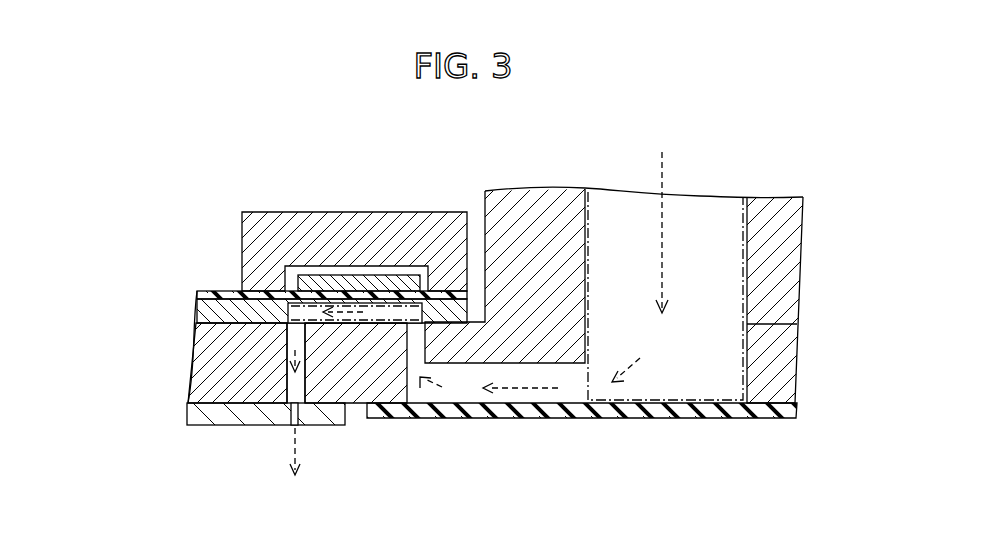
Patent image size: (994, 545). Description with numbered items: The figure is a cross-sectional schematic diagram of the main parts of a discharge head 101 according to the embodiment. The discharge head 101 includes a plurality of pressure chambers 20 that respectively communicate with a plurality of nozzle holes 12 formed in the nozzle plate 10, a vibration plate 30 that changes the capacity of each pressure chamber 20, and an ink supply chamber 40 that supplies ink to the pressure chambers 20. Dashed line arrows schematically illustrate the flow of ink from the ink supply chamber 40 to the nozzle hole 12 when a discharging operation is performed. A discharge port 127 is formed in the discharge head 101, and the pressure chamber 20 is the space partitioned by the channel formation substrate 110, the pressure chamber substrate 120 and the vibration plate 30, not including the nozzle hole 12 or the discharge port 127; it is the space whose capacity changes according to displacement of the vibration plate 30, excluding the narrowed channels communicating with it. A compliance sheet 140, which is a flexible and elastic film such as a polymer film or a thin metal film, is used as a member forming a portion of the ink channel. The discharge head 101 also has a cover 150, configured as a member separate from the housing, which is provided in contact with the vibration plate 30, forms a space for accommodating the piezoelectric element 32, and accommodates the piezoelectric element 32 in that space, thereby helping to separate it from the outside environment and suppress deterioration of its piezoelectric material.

The nozzle plate 10 is at (215, 415).
The nozzle hole 12 is at (290, 427).
The pressure chamber 20 is at (285, 332).
The vibration plate 30 is at (220, 294).
The piezoelectric element 32 is at (306, 283).
The ink supply chamber 40 is at (618, 207).
The discharge head 101 is at (760, 126).
The channel formation substrate 110 is at (200, 375).
The pressure chamber substrate 120 is at (210, 311).
The discharge port 127 is at (290, 401).
The compliance sheet 140 is at (628, 413).
The cover 150 is at (380, 215).